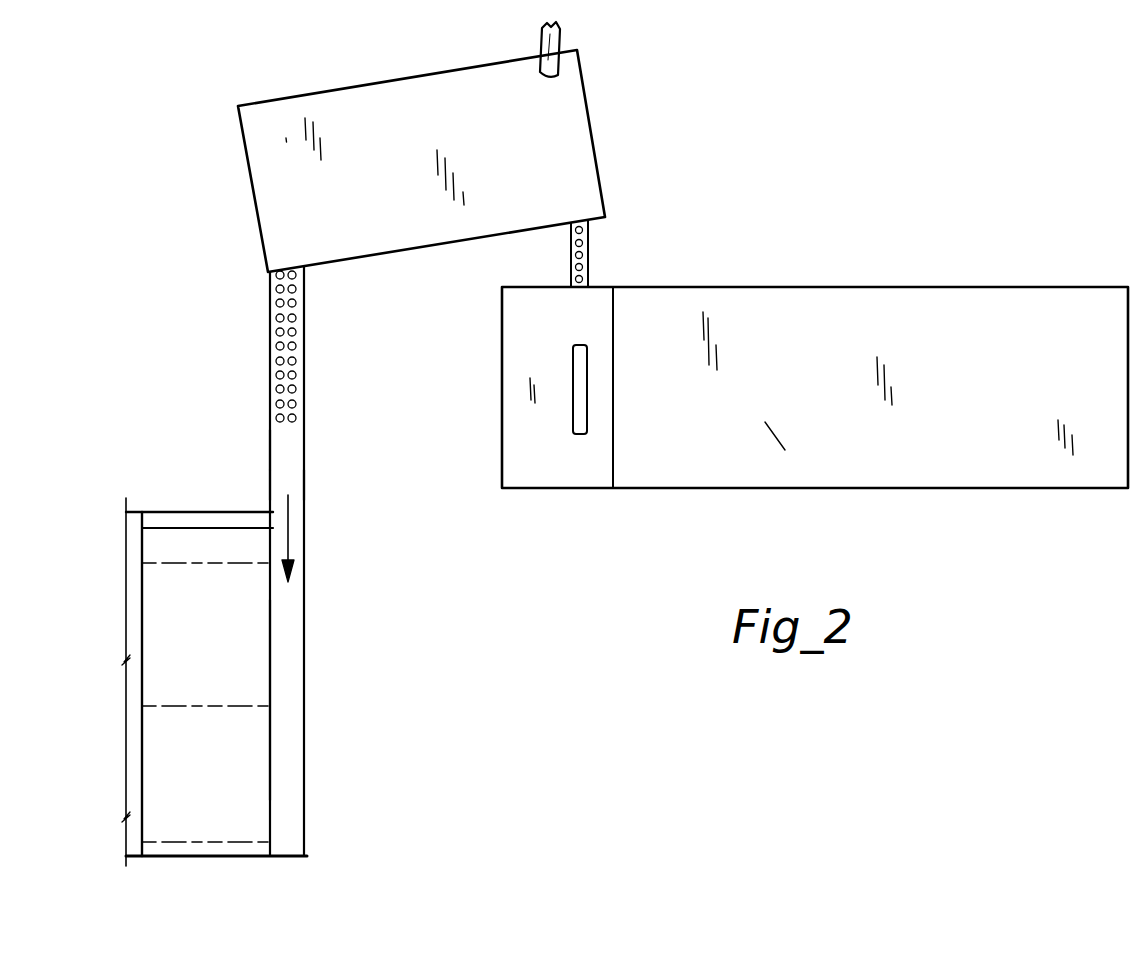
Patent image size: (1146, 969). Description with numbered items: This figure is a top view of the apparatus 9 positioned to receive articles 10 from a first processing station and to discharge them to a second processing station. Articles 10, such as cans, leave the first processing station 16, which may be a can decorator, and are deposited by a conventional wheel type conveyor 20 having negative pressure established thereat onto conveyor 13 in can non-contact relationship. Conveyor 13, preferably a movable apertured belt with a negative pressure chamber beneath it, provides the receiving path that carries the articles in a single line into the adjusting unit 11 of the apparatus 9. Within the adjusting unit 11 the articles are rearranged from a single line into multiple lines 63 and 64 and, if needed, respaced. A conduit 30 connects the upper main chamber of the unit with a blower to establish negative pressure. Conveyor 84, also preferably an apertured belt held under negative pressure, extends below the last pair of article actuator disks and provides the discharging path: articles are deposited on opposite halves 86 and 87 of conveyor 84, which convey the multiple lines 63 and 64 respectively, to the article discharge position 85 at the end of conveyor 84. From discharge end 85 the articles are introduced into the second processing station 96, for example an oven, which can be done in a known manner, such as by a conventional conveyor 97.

The apparatus 9 is at (290, 72).
The articles 10 is at (280, 290).
The adjusting unit 11 is at (592, 128).
The conveyor 13 is at (590, 268).
The first processing station 16 is at (793, 287).
The wheel type conveyor 20 is at (573, 365).
The conduit 30 is at (545, 77).
The first multiple line of articles 63 is at (275, 322).
The second multiple line of articles 64 is at (296, 322).
The conveyor 84 is at (283, 440).
The article discharge position 85 is at (292, 707).
The first half of conveyor 86 is at (278, 480).
The second half of conveyor 87 is at (294, 483).
The second processing station 96 is at (137, 740).
The conventional conveyor 97 is at (252, 795).